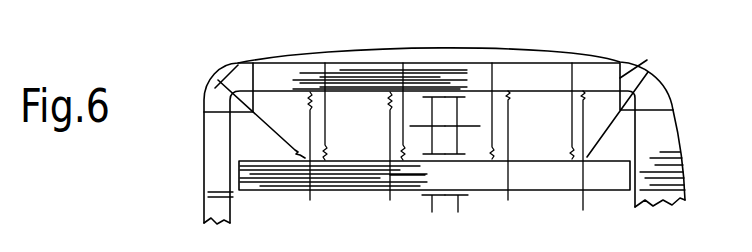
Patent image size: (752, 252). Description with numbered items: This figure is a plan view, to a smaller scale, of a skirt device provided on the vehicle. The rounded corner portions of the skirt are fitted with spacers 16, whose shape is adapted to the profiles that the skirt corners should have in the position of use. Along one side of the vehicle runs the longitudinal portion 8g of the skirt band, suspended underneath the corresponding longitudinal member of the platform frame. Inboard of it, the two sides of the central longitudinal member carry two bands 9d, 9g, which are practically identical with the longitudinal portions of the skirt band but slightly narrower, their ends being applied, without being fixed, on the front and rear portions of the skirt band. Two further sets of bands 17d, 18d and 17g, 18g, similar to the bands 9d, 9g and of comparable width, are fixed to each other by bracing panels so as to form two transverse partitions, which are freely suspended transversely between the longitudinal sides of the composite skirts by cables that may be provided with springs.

The spacers 16 is at (252, 75).
The longitudinal portion of band 8g is at (335, 92).
The band 9g is at (246, 159).
The band 9d is at (280, 192).
The band 17g is at (427, 100).
The band 18g is at (462, 103).
The band 17d is at (428, 200).
The band 18d is at (462, 203).